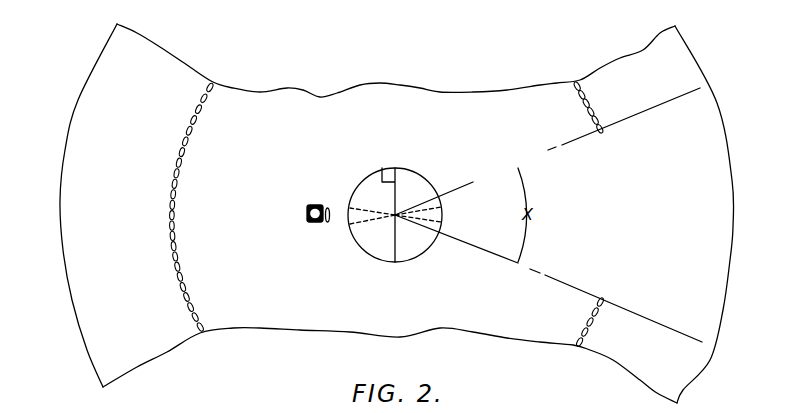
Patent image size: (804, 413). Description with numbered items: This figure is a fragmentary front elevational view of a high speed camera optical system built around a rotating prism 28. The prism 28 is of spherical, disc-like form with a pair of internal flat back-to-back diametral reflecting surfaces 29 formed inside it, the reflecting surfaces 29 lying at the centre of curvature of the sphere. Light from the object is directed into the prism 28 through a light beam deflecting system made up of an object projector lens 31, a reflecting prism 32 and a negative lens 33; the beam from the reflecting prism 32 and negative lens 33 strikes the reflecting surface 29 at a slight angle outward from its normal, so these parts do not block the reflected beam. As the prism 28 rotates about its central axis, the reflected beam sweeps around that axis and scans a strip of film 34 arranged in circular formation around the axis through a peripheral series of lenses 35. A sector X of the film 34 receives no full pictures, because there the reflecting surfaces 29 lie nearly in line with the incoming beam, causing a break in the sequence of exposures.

The prism 28 is at (417, 173).
The reflecting surfaces 29 is at (382, 168).
The object projector lens 31 is at (322, 205).
The reflecting prism 32 is at (307, 205).
The negative lens 33 is at (328, 204).
The strip of film 34 is at (77, 108).
The peripheral series of lenses 35 is at (200, 100).